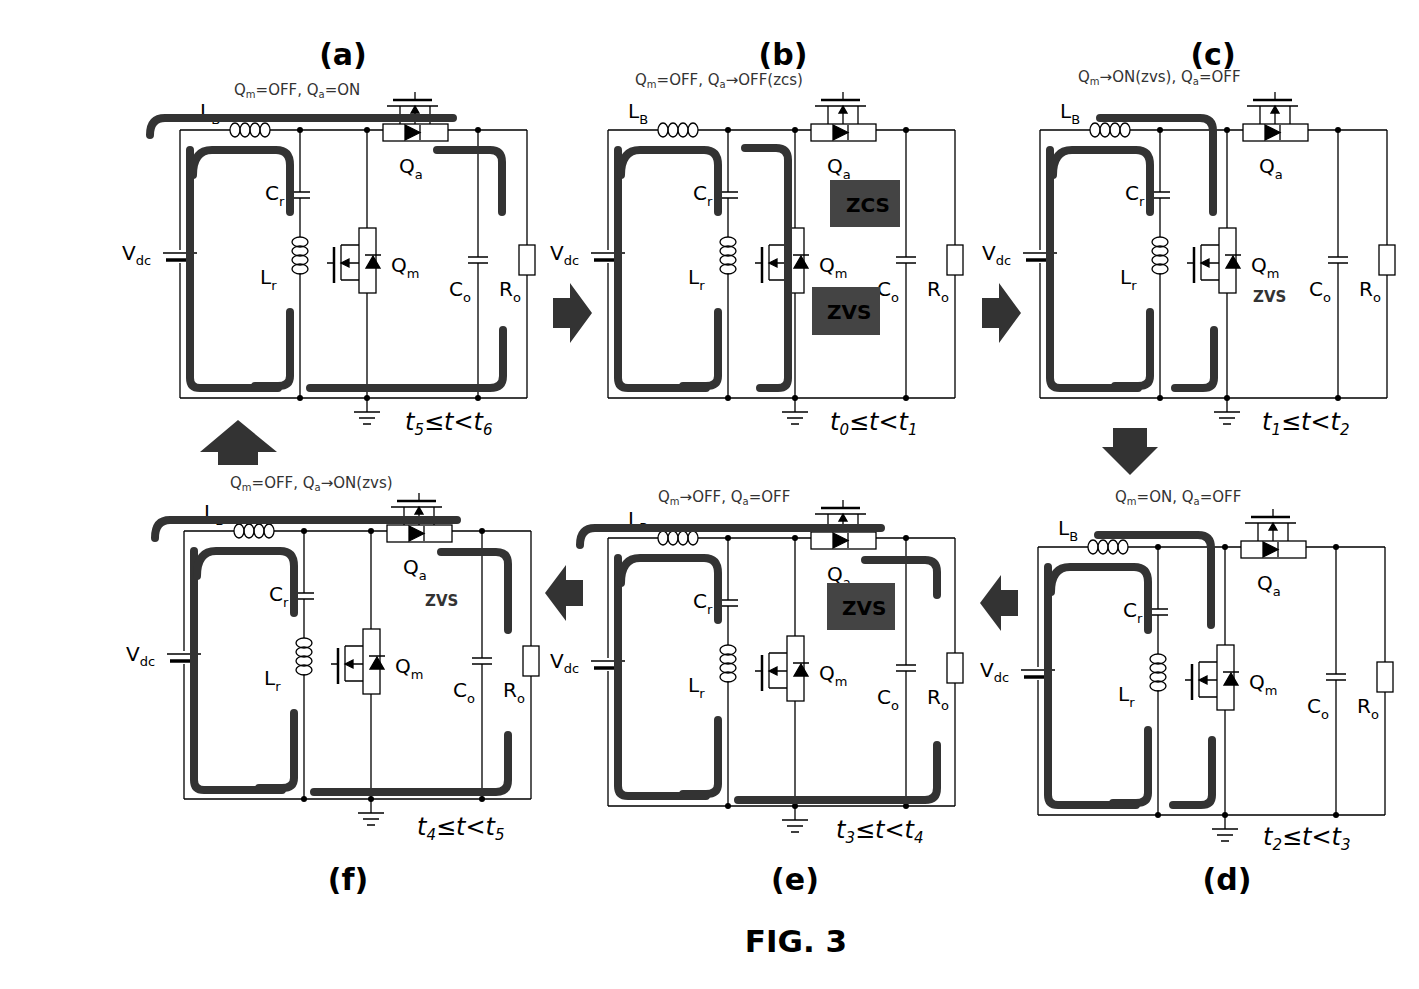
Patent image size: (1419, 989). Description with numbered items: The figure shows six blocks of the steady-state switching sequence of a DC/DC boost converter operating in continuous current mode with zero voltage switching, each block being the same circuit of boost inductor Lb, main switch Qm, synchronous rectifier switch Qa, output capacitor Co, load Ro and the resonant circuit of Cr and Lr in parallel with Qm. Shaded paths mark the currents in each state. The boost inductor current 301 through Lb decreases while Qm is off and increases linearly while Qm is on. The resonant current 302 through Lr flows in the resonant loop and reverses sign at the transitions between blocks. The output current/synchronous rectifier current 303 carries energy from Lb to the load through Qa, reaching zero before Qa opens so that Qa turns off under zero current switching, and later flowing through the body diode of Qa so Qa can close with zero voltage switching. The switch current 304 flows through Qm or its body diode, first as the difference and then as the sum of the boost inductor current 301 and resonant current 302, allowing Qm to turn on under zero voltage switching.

The boost inductor current 301 is at (664, 477).
The resonant current 302 is at (671, 476).
The output current/synchronous rectifier current 303 is at (562, 453).
The switch current 304 is at (1022, 461).